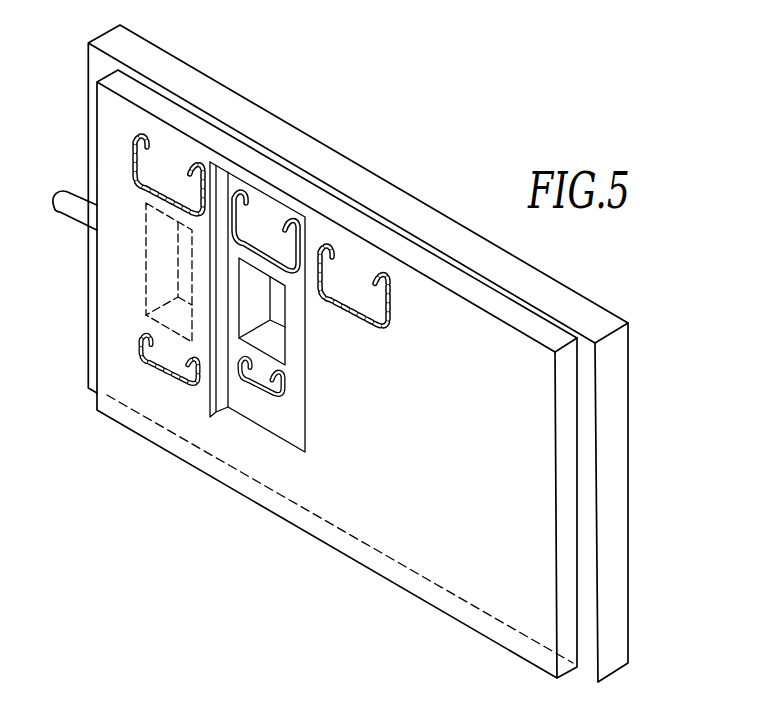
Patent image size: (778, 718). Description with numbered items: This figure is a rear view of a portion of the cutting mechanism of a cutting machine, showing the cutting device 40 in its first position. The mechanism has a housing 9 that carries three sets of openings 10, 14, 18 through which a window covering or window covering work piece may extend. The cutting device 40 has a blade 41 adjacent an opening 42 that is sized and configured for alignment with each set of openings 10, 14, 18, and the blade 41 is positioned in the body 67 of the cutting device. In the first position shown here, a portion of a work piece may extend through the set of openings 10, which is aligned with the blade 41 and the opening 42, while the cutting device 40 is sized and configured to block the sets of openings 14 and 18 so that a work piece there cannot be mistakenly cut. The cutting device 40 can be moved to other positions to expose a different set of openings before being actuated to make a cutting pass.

The housing 9 is at (618, 427).
The set of openings 10 is at (270, 200).
The set of openings 14 is at (179, 136).
The set of openings 18 is at (360, 244).
The cutting device 40 is at (445, 633).
The blade 41 is at (224, 409).
The opening 42 is at (275, 443).
The body 67 is at (362, 552).